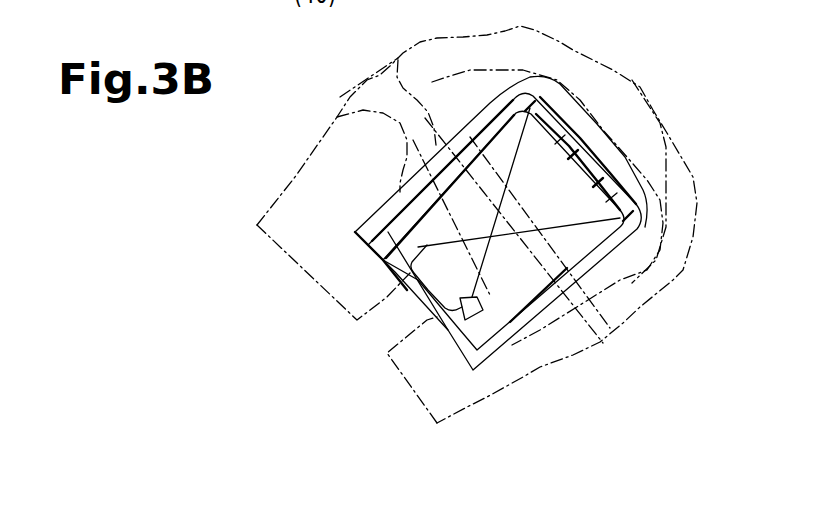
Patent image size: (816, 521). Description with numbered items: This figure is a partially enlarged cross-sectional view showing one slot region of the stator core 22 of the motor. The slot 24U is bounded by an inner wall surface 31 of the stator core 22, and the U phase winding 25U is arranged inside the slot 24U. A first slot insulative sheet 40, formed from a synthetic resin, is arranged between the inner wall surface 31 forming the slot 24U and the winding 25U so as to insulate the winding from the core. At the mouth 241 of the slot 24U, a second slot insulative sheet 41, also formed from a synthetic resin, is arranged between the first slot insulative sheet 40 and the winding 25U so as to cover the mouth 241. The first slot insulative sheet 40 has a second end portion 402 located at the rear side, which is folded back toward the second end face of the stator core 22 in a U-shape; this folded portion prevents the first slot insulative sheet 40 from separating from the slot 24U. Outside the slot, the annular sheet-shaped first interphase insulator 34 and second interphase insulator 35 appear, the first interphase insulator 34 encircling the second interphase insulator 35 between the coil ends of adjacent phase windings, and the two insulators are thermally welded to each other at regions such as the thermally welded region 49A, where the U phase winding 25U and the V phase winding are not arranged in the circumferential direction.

The stator core 22 is at (308, 272).
The slot 24U is at (605, 150).
The U phase winding 25U is at (431, 198).
The inner wall surface 31 is at (494, 104).
The first interphase insulator 34 is at (597, 312).
The second interphase insulator 35 is at (526, 365).
The first slot insulative sheet 40 is at (406, 228).
The second slot insulative sheet 41 is at (432, 325).
The thermally welded region 49A is at (407, 113).
The mouth 241 is at (383, 325).
The second end portion 402 is at (532, 66).